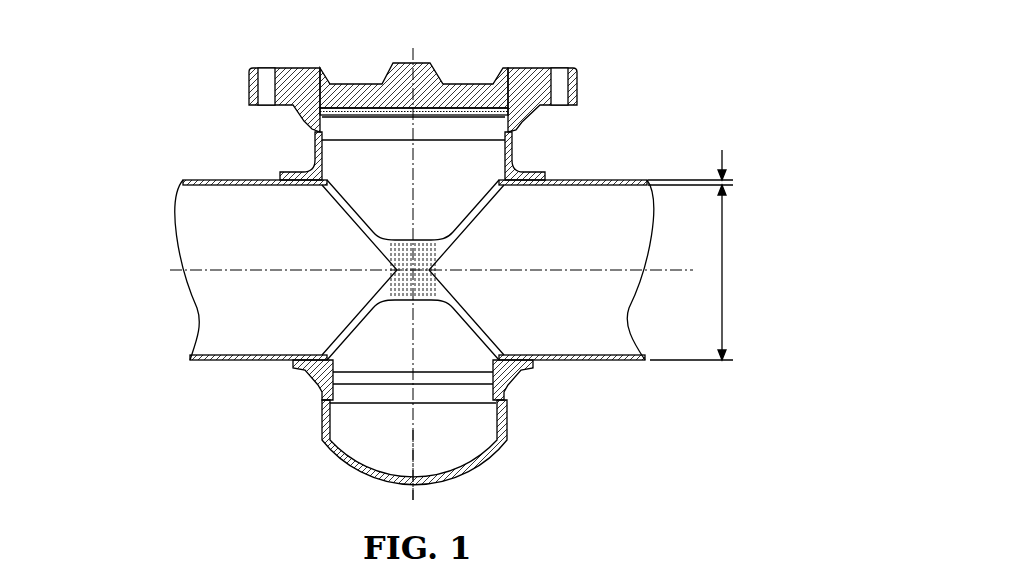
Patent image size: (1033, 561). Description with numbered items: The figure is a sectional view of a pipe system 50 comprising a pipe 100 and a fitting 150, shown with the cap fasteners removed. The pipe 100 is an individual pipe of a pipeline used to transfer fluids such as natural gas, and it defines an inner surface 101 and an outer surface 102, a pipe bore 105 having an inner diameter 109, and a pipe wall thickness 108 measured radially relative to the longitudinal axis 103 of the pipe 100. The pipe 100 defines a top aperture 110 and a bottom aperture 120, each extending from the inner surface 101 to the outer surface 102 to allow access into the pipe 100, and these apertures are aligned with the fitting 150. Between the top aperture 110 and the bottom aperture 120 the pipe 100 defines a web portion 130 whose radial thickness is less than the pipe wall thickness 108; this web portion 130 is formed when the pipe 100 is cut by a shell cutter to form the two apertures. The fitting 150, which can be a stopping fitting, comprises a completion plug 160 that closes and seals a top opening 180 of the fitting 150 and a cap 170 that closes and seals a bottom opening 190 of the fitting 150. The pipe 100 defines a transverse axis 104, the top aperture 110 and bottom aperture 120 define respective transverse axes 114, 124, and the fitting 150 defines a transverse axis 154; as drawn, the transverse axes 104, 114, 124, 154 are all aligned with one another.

The pipe system 50 is at (631, 46).
The pipe 100 is at (614, 362).
The inner surface 101 is at (198, 220).
The outer surface 102 is at (208, 174).
The longitudinal axis 103 is at (652, 270).
The transverse axis 104 is at (553, 466).
The pipe bore 105 is at (213, 328).
The pipe wall thickness 108 is at (733, 183).
The inner diameter 109 is at (722, 269).
The top aperture 110 is at (365, 212).
The transverse axis of top aperture 114 is at (553, 466).
The bottom aperture 120 is at (362, 282).
The transverse axis of bottom aperture 124 is at (553, 466).
The web portion 130 is at (398, 281).
The fitting 150 is at (518, 160).
The transverse axis of fitting 154 is at (413, 445).
The completion plug 160 is at (364, 82).
The cap 170 is at (510, 432).
The top opening 180 is at (497, 96).
The bottom opening 190 is at (338, 399).